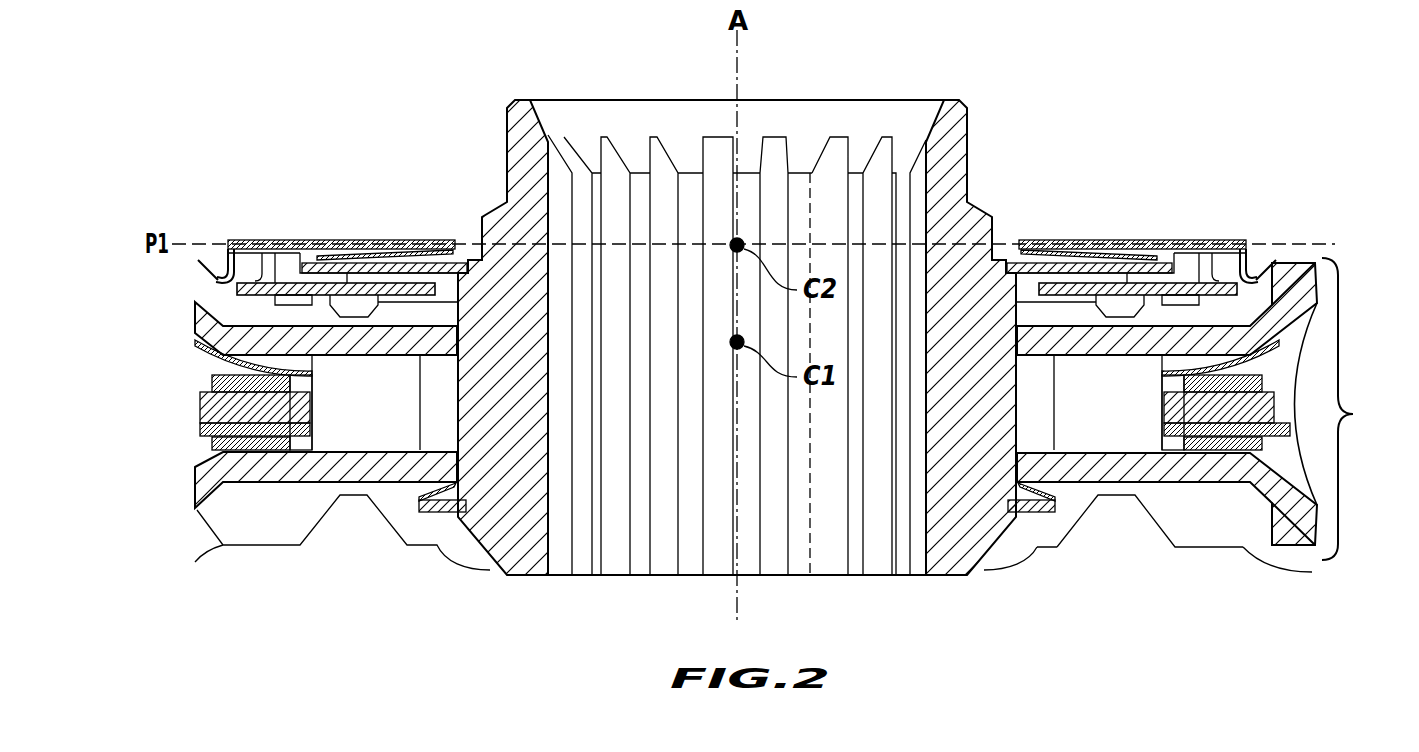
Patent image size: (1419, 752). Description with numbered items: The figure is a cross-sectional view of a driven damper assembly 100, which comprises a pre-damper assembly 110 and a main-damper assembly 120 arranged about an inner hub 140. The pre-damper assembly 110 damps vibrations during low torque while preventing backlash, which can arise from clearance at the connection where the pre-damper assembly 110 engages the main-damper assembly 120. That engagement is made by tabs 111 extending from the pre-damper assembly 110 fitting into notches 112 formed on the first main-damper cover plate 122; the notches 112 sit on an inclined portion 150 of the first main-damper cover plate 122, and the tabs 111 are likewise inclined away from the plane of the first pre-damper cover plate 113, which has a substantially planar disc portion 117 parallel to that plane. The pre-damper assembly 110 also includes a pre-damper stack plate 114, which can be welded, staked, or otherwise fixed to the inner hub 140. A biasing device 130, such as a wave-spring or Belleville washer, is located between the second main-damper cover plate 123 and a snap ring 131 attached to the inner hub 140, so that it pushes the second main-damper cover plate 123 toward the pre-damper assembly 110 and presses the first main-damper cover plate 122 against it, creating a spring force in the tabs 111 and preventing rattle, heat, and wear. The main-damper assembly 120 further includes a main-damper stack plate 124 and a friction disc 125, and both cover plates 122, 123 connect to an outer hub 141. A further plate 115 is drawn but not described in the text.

The driven damper assembly 100 is at (216, 96).
The pre-damper assembly 110 is at (1085, 181).
The tabs 111 is at (234, 266).
The notches 112 is at (218, 278).
The first pre-damper cover plate 113 is at (388, 262).
The pre-damper stack plate 114 is at (1085, 265).
The base plate 115 is at (1190, 285).
The substantially planar disc portion 117 is at (323, 257).
The main-damper assembly 120 is at (1362, 409).
The first main-damper cover plate 122 is at (1085, 345).
The second main-damper cover plate 123 is at (275, 472).
The main-damper stack plate 124 is at (220, 410).
The friction disc 125 is at (215, 428).
The biasing device 130 is at (1040, 490).
The snap ring 131 is at (1040, 512).
The inner hub 140 is at (508, 206).
The outer hub 141 is at (368, 422).
The inclined portion 150 is at (1288, 308).